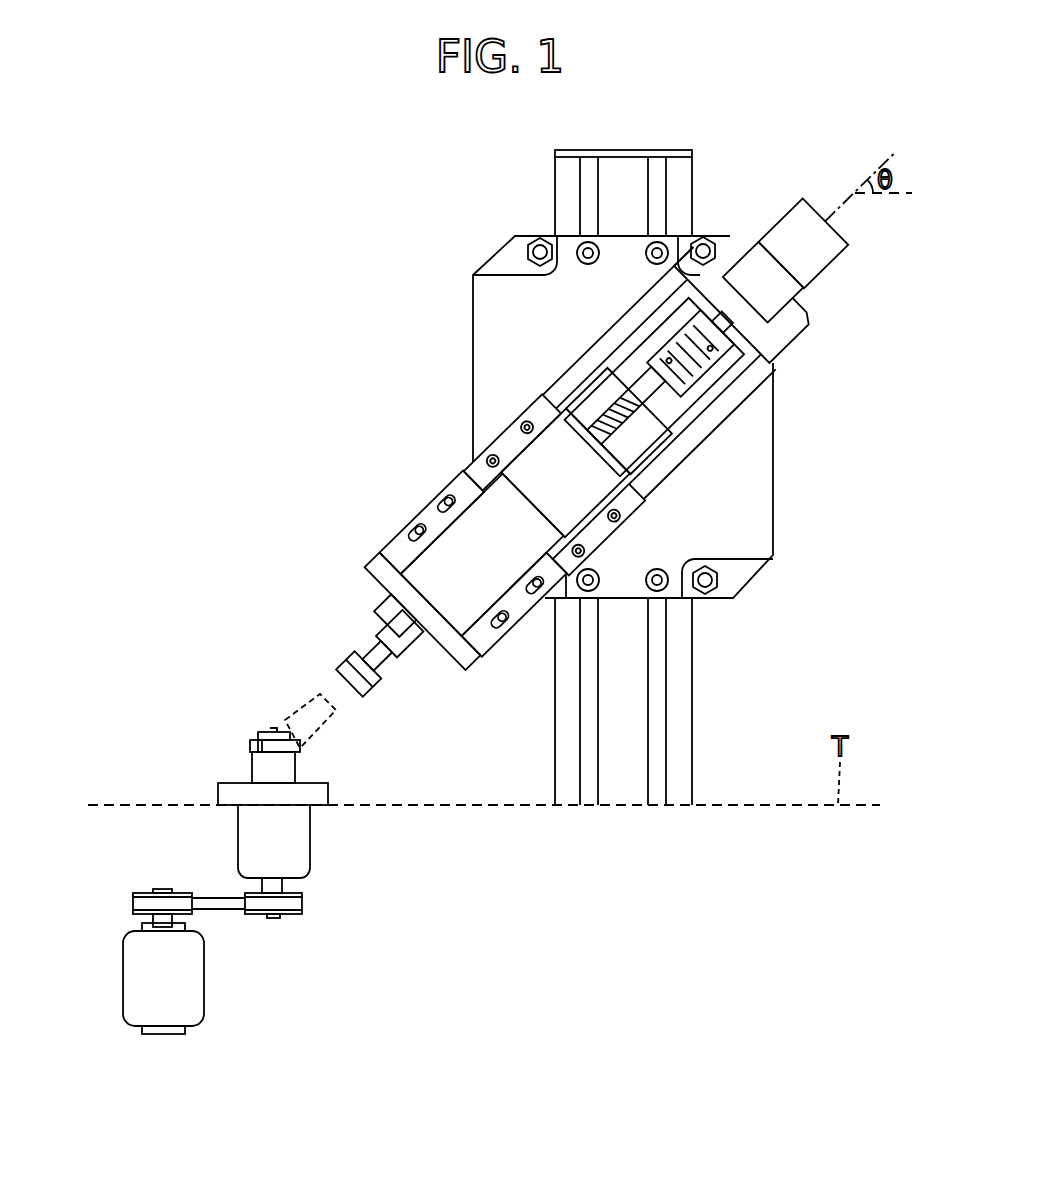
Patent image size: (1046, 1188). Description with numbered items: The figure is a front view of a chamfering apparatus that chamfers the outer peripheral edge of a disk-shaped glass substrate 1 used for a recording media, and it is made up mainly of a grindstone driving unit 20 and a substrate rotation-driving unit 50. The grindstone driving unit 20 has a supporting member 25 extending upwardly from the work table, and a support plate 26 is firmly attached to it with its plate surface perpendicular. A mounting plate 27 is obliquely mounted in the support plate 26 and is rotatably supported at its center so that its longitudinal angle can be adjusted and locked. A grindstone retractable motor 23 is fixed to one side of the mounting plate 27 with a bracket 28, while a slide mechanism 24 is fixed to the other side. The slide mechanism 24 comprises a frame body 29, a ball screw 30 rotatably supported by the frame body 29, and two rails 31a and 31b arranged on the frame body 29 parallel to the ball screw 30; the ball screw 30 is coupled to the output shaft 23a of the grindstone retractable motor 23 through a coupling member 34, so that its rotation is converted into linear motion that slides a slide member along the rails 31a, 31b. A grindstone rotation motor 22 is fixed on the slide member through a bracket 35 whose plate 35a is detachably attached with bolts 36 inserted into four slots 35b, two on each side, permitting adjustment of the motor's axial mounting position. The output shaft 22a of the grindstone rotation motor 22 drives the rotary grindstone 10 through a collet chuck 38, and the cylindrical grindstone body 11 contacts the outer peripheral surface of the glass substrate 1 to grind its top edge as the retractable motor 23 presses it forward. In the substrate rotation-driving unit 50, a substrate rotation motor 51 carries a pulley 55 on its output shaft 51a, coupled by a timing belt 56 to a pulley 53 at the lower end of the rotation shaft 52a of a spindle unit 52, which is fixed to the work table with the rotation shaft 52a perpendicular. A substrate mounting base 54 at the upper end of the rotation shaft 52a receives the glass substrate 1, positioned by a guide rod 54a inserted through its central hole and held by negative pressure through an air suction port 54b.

The glass substrate 1 is at (262, 735).
The rotary grindstone 10 is at (352, 650).
The grindstone body 11 is at (345, 655).
The grindstone driving unit 20 is at (447, 316).
The grindstone rotation motor 22 is at (477, 663).
The output shaft of the grindstone rotation motor 22a is at (388, 618).
The grindstone retractable motor 23 is at (808, 308).
The output shaft of the grindstone retractable motor 23a is at (770, 376).
The slide mechanism 24 is at (683, 468).
The supporting member 25 is at (692, 715).
The support plate 26 is at (773, 520).
The mounting plate 27 is at (808, 352).
The bracket 28 is at (733, 387).
The frame body 29 is at (700, 398).
The ball screw 30 is at (598, 375).
The rail 31a is at (583, 377).
The rail 31b is at (658, 470).
The coupling member 34 is at (660, 350).
The bracket 35 is at (365, 565).
The plate 35a is at (385, 543).
The slots 35b is at (420, 528).
The bolts 36 is at (420, 520).
The collet chuck 38 is at (393, 658).
The substrate rotation-driving unit 50 is at (358, 862).
The substrate rotation motor 51 is at (122, 982).
The output shaft of the substrate rotation motor 51a is at (150, 918).
The spindle unit 52 is at (312, 838).
The rotation shaft 52a is at (283, 882).
The pulley 53 is at (283, 920).
The substrate mounting base 54 is at (300, 752).
The guide rod 54a is at (273, 728).
The air suction port 54b is at (252, 740).
The pulley 55 is at (137, 893).
The timing belt 56 is at (225, 915).